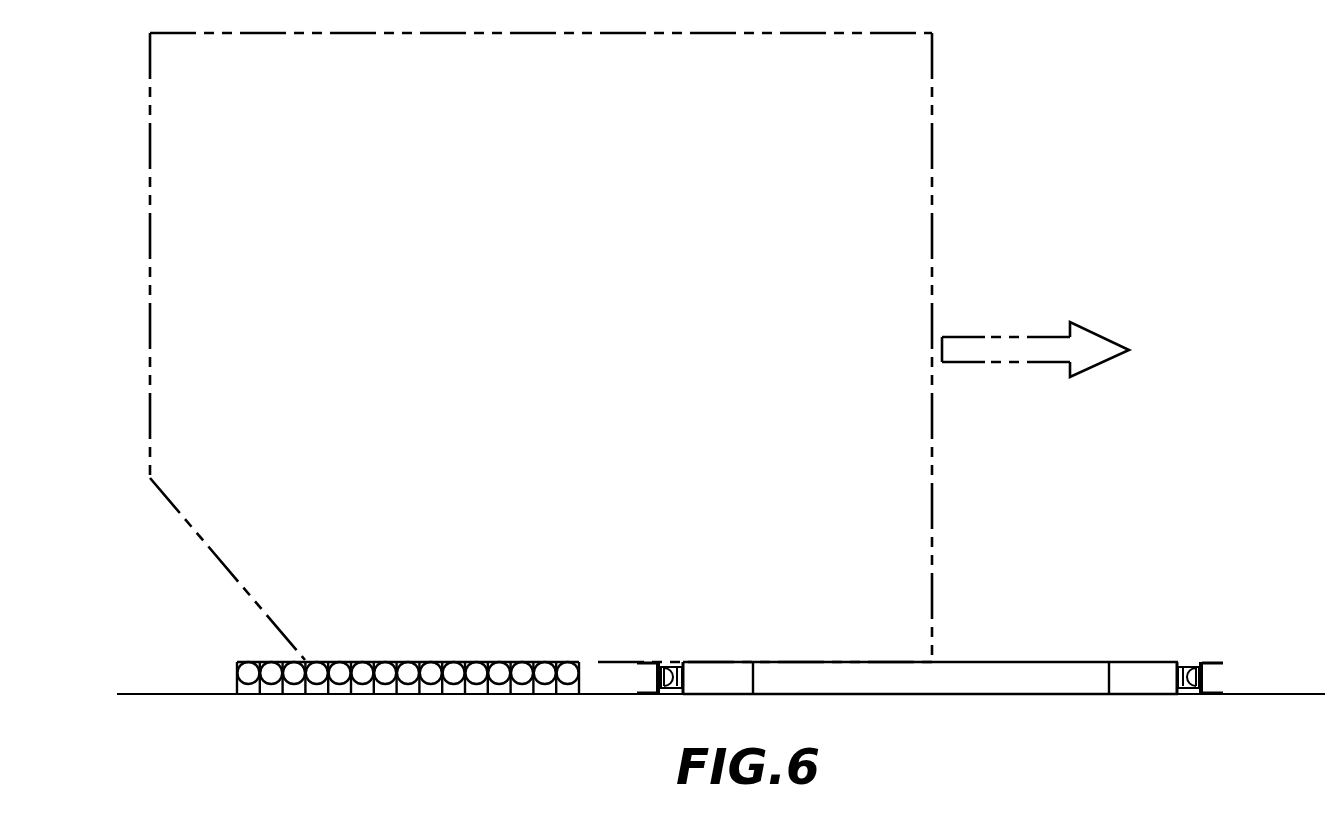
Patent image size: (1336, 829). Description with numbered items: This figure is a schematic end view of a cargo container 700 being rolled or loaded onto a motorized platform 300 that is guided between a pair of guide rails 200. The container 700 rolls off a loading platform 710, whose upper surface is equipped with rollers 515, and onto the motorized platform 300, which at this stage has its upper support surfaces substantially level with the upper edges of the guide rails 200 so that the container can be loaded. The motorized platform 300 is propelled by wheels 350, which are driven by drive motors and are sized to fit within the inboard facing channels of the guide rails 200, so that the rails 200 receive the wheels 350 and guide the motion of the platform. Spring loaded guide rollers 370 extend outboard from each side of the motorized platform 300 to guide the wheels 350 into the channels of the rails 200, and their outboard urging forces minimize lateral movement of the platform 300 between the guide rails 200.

The cargo container 700 is at (668, 386).
The loading platform 710 is at (200, 641).
The rollers 515 is at (473, 662).
The motorized platform 300 is at (1072, 647).
The guide rails 200 is at (645, 693).
The wheels 350 is at (678, 678).
The spring loaded guide rollers 370 is at (652, 680).